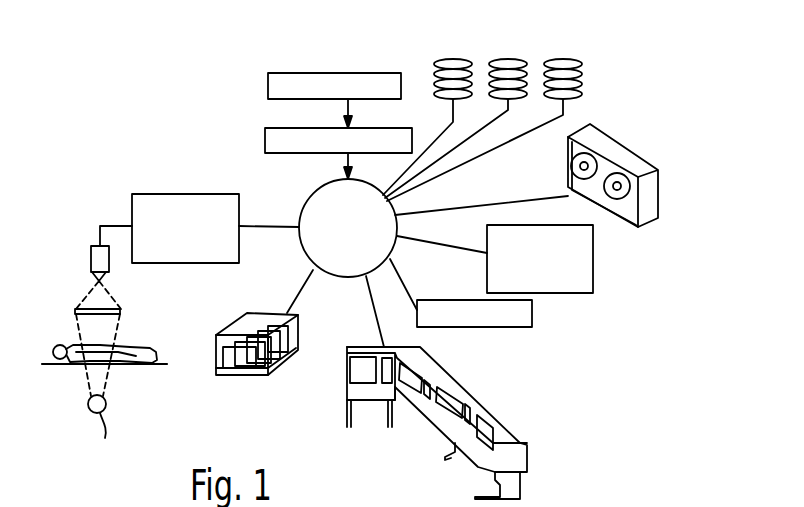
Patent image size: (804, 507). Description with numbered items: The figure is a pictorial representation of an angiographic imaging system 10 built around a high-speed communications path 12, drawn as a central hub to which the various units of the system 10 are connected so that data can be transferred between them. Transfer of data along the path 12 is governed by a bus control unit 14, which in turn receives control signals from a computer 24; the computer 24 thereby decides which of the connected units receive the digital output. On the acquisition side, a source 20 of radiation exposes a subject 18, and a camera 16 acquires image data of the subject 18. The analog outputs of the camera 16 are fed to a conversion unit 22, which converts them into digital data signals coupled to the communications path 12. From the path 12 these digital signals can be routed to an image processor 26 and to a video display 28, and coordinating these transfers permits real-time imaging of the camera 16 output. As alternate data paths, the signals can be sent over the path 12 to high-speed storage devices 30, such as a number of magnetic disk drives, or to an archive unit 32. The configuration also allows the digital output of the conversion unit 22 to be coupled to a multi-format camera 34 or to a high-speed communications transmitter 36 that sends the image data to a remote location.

The angiographic imaging system 10 is at (563, 401).
The high-speed communications path 12 is at (318, 208).
The bus control unit 14 is at (265, 140).
The camera 16 is at (91, 262).
The subject 18 is at (128, 345).
The source of radiation 20 is at (100, 428).
The conversion unit 22 is at (157, 194).
The computer 24 is at (308, 73).
The image processor 26 is at (245, 318).
The video display 28 is at (428, 415).
The high-speed storage devices 30 is at (597, 47).
The archive unit 32 is at (652, 190).
The multi-format camera 34 is at (593, 280).
The high-speed communications transmitter 36 is at (515, 320).